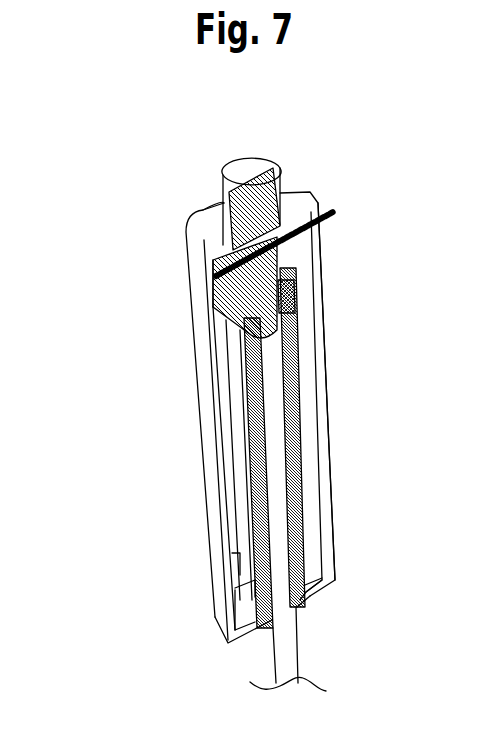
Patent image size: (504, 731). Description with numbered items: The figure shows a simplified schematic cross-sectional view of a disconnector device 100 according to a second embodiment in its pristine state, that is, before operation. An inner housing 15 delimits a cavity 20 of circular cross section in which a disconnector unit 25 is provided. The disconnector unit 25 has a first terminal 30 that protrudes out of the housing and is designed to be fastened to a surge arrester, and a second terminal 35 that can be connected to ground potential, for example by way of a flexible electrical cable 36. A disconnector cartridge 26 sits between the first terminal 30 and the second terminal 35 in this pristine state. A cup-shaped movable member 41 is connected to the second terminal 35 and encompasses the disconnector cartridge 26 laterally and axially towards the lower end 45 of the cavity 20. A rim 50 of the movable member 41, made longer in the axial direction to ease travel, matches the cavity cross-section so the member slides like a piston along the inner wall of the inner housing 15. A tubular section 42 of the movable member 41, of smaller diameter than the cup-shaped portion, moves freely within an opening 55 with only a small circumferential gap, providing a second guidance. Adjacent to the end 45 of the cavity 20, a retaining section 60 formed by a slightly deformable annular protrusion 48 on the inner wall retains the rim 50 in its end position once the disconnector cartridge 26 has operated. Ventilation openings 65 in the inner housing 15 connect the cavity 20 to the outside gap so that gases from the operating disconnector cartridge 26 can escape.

The disconnector device 100 is at (178, 143).
The first terminal 30 is at (253, 208).
The disconnector unit 25 is at (305, 218).
The disconnector cartridge 26 is at (306, 241).
The rim 50 is at (300, 252).
The second terminal 35 is at (263, 303).
The electrical cable 36 is at (268, 380).
The tubular section 42 is at (253, 440).
The ventilation openings 65 is at (237, 465).
The end of cavity 45 is at (215, 617).
The movable member 41 is at (320, 266).
The inner housing 15 is at (317, 330).
The cavity 20 is at (307, 387).
The annular protrusion 48 is at (318, 494).
The retaining section 60 is at (330, 557).
The opening 55 is at (317, 611).